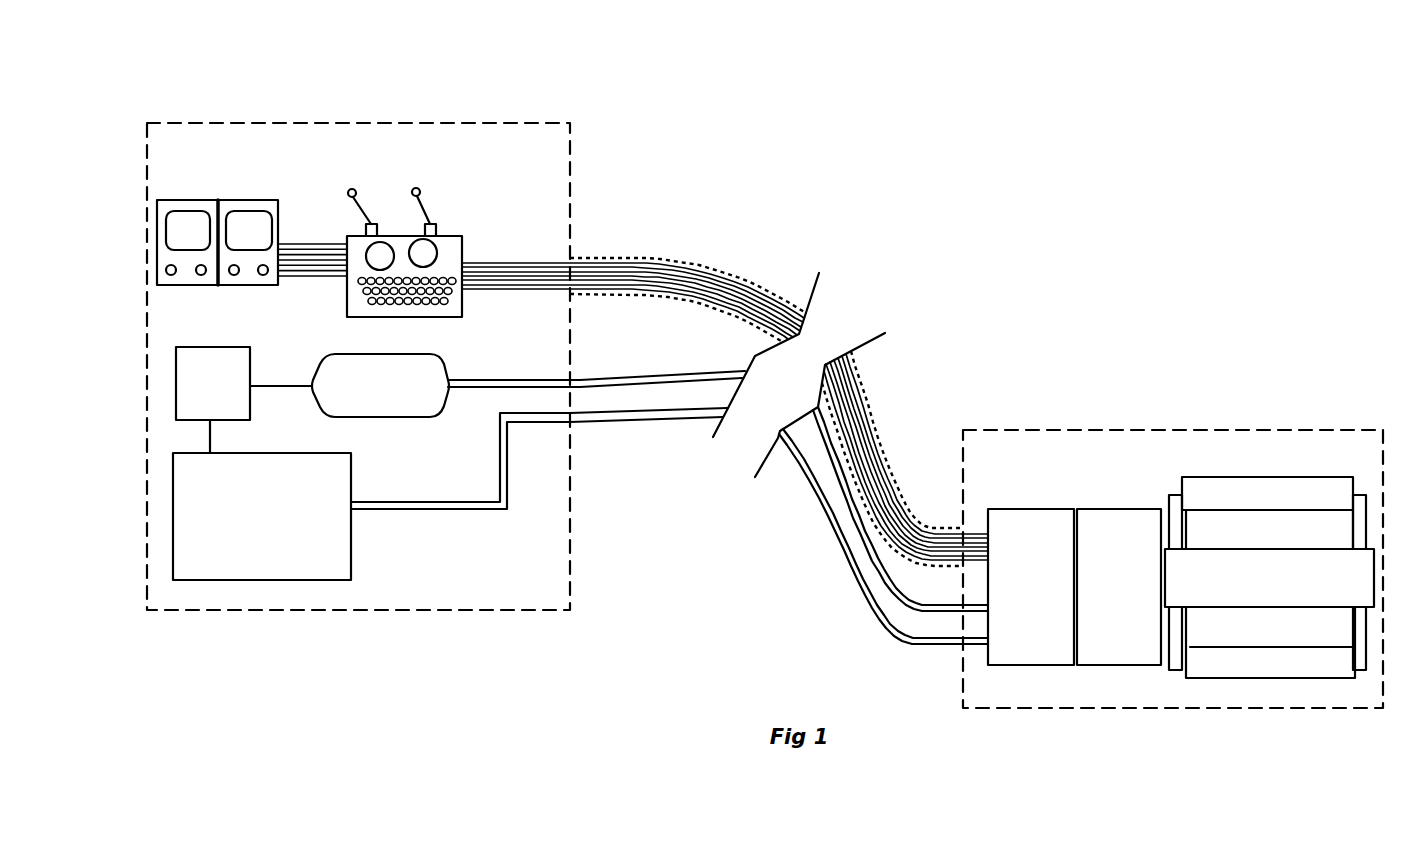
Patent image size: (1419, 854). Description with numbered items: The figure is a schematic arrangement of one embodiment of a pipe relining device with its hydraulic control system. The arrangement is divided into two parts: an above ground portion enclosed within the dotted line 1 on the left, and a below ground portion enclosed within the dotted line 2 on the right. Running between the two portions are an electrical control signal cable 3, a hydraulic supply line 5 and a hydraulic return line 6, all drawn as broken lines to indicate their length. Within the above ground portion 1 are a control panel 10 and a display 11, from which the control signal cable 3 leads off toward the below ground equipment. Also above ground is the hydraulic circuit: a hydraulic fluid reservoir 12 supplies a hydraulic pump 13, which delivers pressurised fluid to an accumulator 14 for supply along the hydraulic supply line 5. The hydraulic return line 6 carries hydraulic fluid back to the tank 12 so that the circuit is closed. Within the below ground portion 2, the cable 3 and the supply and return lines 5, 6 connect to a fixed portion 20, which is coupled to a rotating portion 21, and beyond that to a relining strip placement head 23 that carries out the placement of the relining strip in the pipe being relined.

The above ground portion 1 is at (263, 122).
The below ground portion 2 is at (1077, 428).
The electrical control signal cable 3 is at (745, 282).
The hydraulic supply line 5 is at (867, 543).
The hydraulic return line 6 is at (810, 470).
The control panel 10 is at (437, 257).
The display 11 is at (215, 232).
The hydraulic fluid reservoir 12 is at (286, 557).
The hydraulic pump 13 is at (215, 373).
The accumulator 14 is at (378, 397).
The fixed portion 20 is at (1041, 644).
The rotating portion 21 is at (1134, 643).
The relining strip placement head 23 is at (1319, 659).